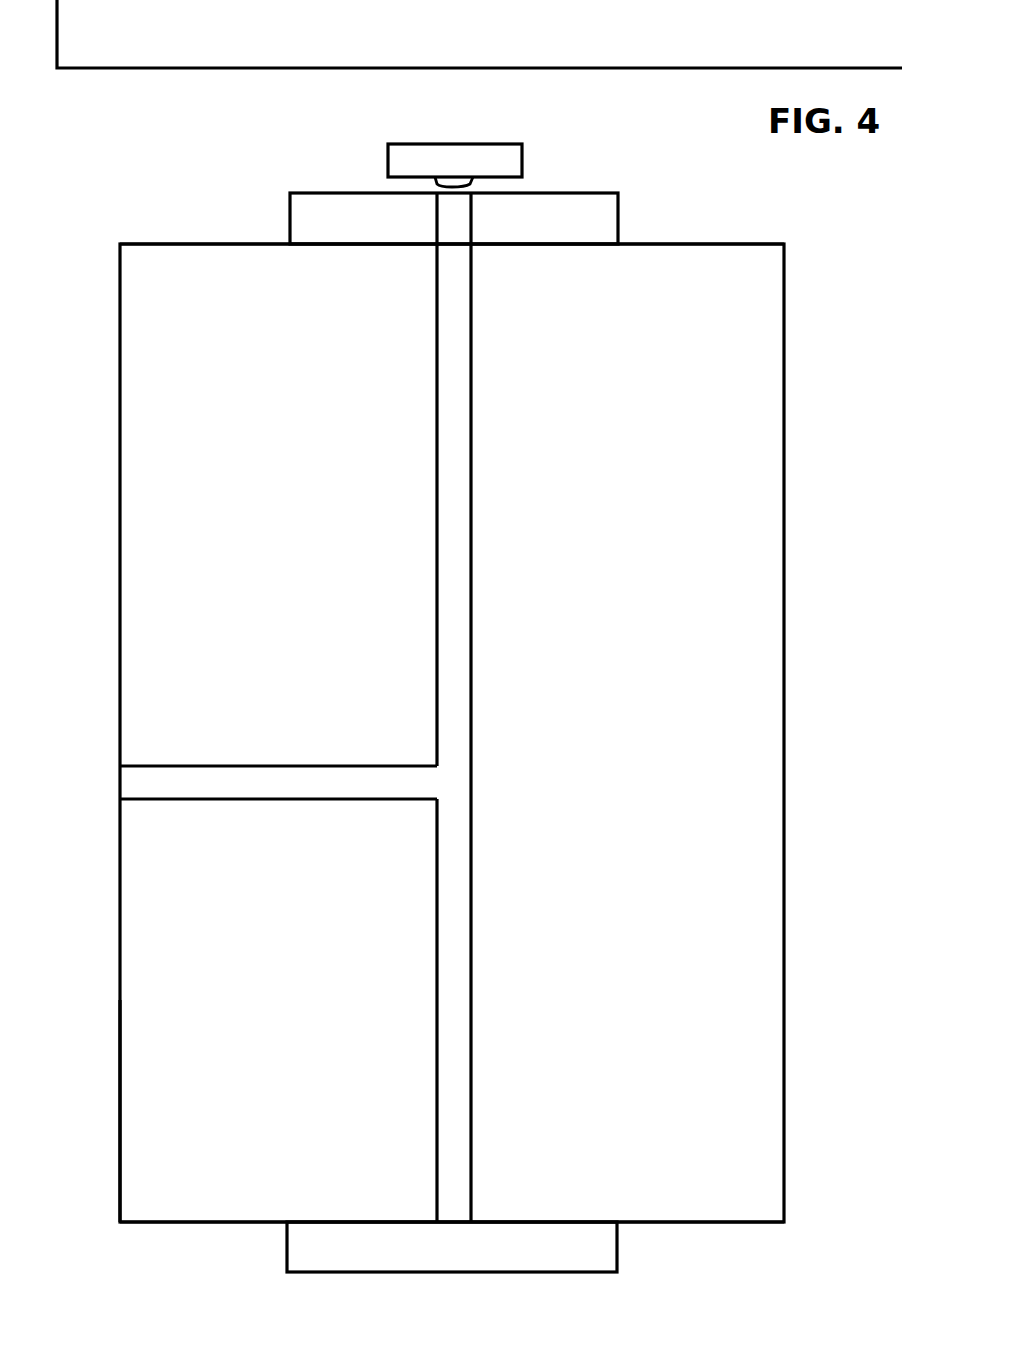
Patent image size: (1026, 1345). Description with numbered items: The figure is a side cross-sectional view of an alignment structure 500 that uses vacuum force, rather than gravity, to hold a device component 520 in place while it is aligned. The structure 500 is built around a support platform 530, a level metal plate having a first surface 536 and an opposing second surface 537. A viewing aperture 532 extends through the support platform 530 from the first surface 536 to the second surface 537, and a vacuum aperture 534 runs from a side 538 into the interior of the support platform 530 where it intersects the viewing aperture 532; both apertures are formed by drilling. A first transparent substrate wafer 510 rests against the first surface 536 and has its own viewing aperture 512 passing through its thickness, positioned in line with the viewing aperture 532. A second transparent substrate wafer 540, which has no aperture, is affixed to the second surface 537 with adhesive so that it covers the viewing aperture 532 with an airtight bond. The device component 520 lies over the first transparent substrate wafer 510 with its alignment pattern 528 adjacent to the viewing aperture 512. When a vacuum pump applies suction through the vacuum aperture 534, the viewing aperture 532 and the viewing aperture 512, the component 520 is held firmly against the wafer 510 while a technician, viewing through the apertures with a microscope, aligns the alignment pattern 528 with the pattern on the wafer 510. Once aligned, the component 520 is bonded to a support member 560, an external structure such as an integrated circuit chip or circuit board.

The alignment structure 500 is at (820, 256).
The first transparent substrate wafer 510 is at (290, 220).
The viewing aperture 512 is at (458, 218).
The device component 520 is at (388, 152).
The alignment pattern 528 is at (453, 184).
The support platform 530 is at (120, 278).
The viewing aperture 532 is at (468, 364).
The vacuum aperture 534 is at (142, 760).
The first surface 536 is at (722, 244).
The second surface 537 is at (253, 1216).
The side 538 is at (120, 1162).
The second transparent substrate wafer 540 is at (618, 1247).
The support member 560 is at (181, 68).